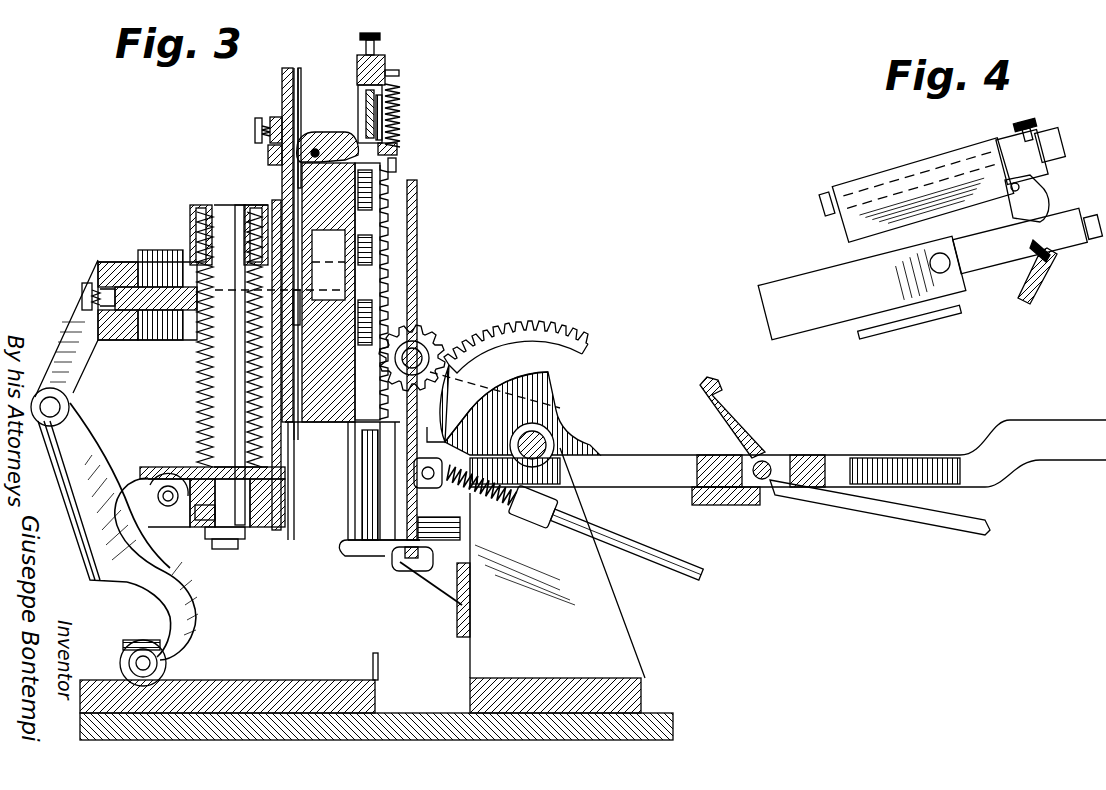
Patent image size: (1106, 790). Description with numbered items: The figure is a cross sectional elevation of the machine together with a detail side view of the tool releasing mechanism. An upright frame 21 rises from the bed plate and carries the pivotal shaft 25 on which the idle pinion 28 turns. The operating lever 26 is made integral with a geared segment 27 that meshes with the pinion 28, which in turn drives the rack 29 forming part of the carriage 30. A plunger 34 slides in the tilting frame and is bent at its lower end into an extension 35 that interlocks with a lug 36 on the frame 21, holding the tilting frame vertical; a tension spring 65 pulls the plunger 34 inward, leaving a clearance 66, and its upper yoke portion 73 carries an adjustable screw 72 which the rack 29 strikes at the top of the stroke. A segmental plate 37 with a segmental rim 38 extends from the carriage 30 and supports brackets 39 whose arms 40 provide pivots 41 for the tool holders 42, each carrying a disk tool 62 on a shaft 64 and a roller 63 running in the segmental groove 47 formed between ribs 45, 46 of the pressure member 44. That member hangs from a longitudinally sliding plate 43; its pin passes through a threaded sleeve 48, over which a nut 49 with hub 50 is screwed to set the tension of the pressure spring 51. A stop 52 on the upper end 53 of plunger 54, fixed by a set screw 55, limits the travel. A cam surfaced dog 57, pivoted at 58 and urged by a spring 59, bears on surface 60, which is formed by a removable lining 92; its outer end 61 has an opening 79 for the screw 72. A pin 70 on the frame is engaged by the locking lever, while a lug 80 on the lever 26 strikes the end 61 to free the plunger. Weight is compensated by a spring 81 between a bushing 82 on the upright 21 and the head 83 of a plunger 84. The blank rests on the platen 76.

In FIG. 3, the upright frame 21 is at (612, 640).
In FIG. 3, the horizontal pivotal shaft 25 is at (452, 345).
In FIG. 3, the lever 26 is at (640, 488).
In FIG. 3, the geared segment 27 is at (585, 332).
In FIG. 3, the idle pinion 28 is at (430, 345).
In FIG. 3, the rack 29 is at (370, 270).
In FIG. 3, the carriage 30 is at (345, 422).
In FIG. 3, the plunger 34 is at (398, 100).
In FIG. 3, the extension 35 is at (378, 560).
In FIG. 3, the lug 36 is at (402, 575).
In FIG. 3, the segmental plate 37 is at (165, 300).
In FIG. 3, the segmental rim 38 is at (126, 262).
In FIG. 3, the brackets 39 is at (102, 262).
In FIG. 3, the arm 40 is at (68, 338).
In FIG. 3, the pivotal point of attachment 41 is at (62, 407).
In FIG. 3, the tool holders 42 is at (62, 505).
In FIG. 3, the longitudinally sliding plate 43 is at (283, 460).
In FIG. 3, the pressure member 44 is at (245, 535).
In FIG. 3, the segmental rib 45 is at (200, 520).
In FIG. 3, the segmental rib 46 is at (160, 467).
In FIG. 3, the segmental groove 47 is at (222, 378).
In FIG. 3, the threaded sleeve 48 is at (190, 244).
In FIG. 3, the nut 49 is at (192, 210).
In FIG. 3, the hub 50 is at (222, 230).
In FIG. 3, the pressure spring 51 is at (205, 400).
In FIG. 3, the stop 52 is at (276, 117).
In FIG. 4, the stop 52 is at (1040, 148).
In FIG. 3, the upper end of plunger 53 is at (300, 82).
In FIG. 4, the upper end of plunger 53 is at (830, 212).
In FIG. 3, the plunger 54 is at (298, 328).
In FIG. 3, the set screw 55 is at (258, 128).
In FIG. 4, the set screw 55 is at (1030, 122).
In FIG. 3, the cam surfaced dog 57 is at (305, 150).
In FIG. 4, the cam surfaced dog 57 is at (1042, 200).
In FIG. 3, the pivot 58 is at (285, 292).
In FIG. 3, the spring 59 is at (397, 166).
In FIG. 3, the surface 60 is at (301, 106).
In FIG. 3, the outer end of dog 61 is at (398, 150).
In FIG. 4, the outer end of dog 61 is at (1040, 262).
In FIG. 3, the tool 62 is at (130, 644).
In FIG. 3, the roller 63 is at (165, 508).
In FIG. 3, the shaft 64 is at (158, 662).
In FIG. 3, the tension spring 65 is at (396, 96).
In FIG. 3, the clearance 66 is at (416, 560).
In FIG. 4, the pin 70 is at (940, 273).
In FIG. 3, the adjustable screw 72 is at (375, 116).
In FIG. 4, the adjustable screw 72 is at (1095, 240).
In FIG. 3, the upper yoke portion 73 is at (386, 62).
In FIG. 3, the platen 76 is at (290, 680).
In FIG. 3, the opening 79 is at (383, 134).
In FIG. 3, the lug 80 is at (732, 506).
In FIG. 4, the lug 80 is at (1040, 290).
In FIG. 3, the spring 81 is at (472, 498).
In FIG. 3, the bushing 82 is at (530, 522).
In FIG. 3, the head 83 is at (442, 485).
In FIG. 3, the plunger 84 is at (655, 560).
In FIG. 3, the removable lining 92 is at (300, 68).